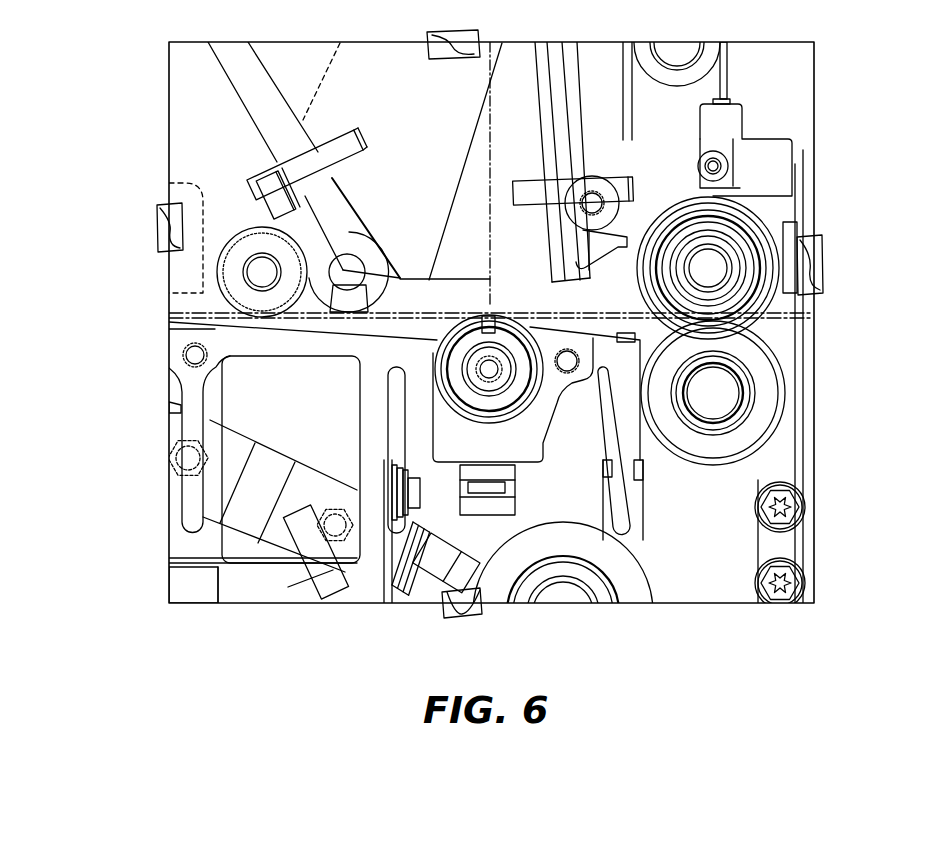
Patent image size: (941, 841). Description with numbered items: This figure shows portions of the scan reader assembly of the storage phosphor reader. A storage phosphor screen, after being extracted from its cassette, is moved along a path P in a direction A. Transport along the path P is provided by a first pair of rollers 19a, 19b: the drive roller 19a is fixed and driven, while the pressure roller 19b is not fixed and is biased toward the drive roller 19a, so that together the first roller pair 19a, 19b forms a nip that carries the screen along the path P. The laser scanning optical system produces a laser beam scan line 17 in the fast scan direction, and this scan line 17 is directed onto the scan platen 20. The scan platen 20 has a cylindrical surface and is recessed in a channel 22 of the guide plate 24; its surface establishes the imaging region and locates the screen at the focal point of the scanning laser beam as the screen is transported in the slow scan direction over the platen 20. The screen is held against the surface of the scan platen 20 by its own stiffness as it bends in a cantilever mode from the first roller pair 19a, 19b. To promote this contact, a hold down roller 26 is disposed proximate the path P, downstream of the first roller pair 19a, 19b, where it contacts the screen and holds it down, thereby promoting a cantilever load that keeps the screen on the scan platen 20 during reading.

The laser beam scan line 17 is at (488, 260).
The drive roller 19a is at (760, 400).
The pressure roller 19b is at (765, 300).
The scan platen 20 is at (445, 397).
The channel 22 is at (437, 368).
The guide plate 24 is at (553, 415).
The hold down roller 26 is at (218, 278).
The path P is at (180, 311).
The direction A is at (418, 303).